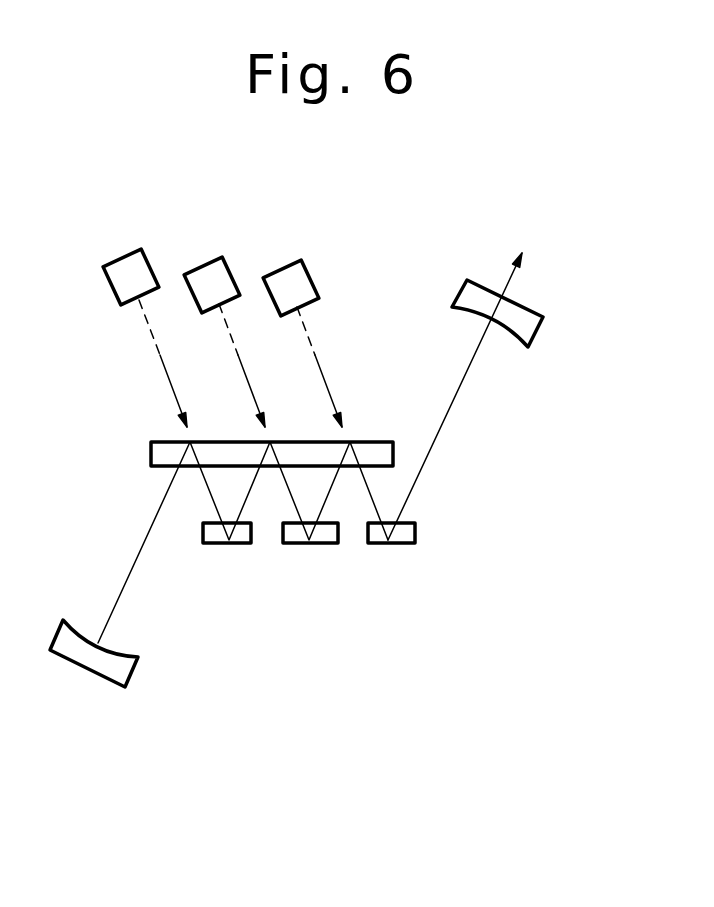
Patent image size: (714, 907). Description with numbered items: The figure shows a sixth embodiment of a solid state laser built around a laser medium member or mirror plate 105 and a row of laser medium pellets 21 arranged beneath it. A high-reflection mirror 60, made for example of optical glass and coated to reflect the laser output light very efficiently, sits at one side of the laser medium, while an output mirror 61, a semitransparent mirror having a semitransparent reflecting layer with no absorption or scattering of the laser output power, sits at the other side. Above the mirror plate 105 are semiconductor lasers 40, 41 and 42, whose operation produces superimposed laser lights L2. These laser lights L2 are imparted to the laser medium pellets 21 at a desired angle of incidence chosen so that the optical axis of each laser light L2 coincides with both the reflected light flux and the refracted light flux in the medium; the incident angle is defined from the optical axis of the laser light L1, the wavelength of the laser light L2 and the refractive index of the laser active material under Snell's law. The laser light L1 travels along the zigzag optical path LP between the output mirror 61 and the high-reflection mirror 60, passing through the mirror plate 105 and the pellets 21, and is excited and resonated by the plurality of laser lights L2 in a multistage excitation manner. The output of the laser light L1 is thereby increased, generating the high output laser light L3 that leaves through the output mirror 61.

The semiconductor laser 40 is at (118, 252).
The semiconductor laser 41 is at (203, 262).
The semiconductor laser 42 is at (283, 267).
The laser medium member or mirror plate 105 is at (378, 450).
The laser medium pellet 21 is at (242, 543).
The high-reflection mirror 60 is at (88, 672).
The output mirror 61 is at (537, 335).
The laser light L1 is at (130, 588).
The laser light L2 is at (237, 385).
The high output laser light L3 is at (507, 290).
The zigzag optical path LP is at (168, 480).